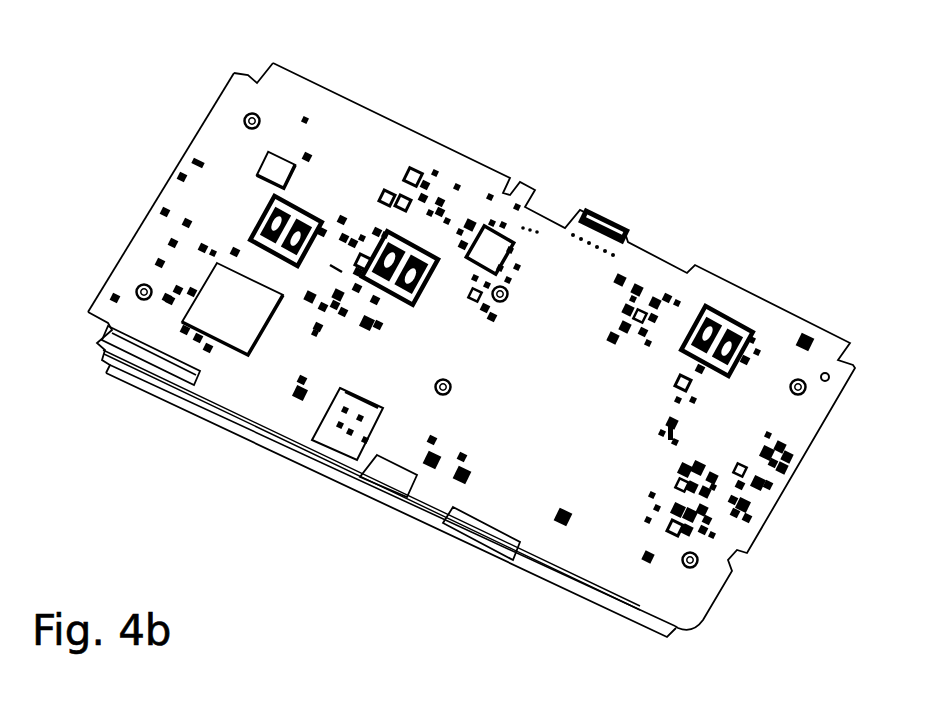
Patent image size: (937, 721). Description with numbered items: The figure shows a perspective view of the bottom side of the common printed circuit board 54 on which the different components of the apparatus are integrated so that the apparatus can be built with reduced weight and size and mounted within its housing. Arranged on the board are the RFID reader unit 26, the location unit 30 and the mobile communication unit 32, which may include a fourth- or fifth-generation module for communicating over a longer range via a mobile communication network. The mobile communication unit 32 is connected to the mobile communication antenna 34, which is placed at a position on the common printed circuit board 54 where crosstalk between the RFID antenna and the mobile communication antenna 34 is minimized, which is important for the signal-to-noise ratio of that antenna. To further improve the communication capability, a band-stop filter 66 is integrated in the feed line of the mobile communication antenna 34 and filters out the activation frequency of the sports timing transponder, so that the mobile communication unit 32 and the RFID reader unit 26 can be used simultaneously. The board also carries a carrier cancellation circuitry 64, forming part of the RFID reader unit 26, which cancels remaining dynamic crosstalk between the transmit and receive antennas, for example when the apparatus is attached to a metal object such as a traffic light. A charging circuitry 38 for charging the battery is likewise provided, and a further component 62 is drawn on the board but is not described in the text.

The RFID reader unit 26 is at (349, 198).
The common printed circuit board 54 is at (142, 223).
The carrier cancellation circuitry 64 is at (421, 245).
The connector module 62 is at (736, 312).
The band-stop filter 66 is at (86, 333).
The mobile communication antenna 34 is at (115, 372).
The location unit 30 is at (166, 380).
The mobile communication unit 32 is at (225, 363).
The charging circuitry 38 is at (730, 532).